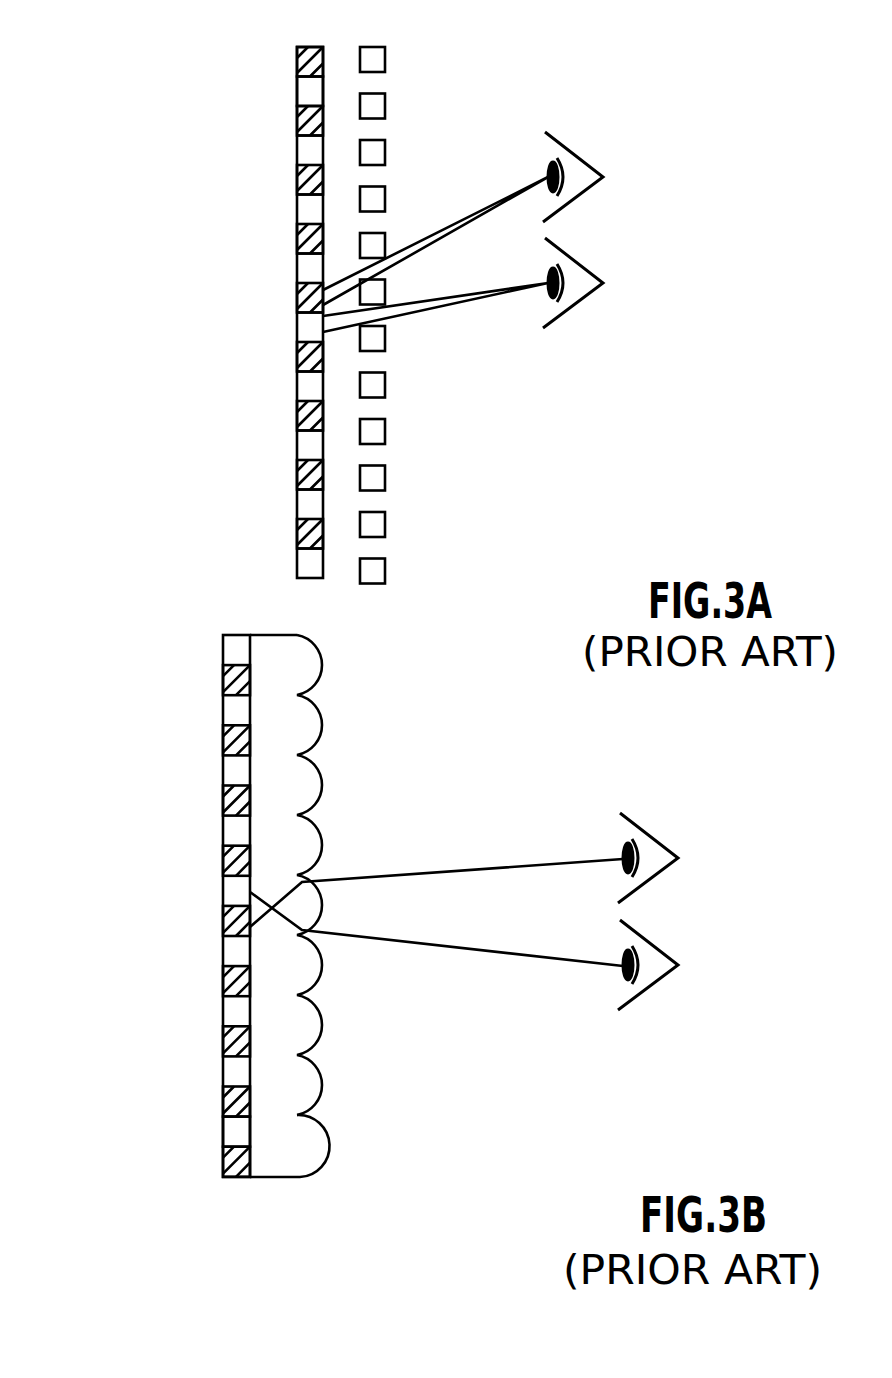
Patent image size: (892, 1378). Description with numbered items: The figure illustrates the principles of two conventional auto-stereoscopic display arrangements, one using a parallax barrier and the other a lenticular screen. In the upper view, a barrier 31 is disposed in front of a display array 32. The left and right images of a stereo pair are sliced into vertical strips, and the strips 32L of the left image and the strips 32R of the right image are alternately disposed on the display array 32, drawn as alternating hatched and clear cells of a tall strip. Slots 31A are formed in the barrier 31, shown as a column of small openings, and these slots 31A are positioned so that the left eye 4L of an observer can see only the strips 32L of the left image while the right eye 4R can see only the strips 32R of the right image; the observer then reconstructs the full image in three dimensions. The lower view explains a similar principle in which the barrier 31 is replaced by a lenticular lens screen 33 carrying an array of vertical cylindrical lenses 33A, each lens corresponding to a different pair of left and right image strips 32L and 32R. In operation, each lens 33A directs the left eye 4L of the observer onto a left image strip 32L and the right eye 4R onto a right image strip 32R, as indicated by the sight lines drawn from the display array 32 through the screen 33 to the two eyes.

In FIG. 3A, the barrier 31 is at (429, 315).
In FIG. 3A, the slots 31A is at (368, 505).
In FIG. 3A, the display array 32 is at (226, 291).
In FIG. 3B, the display array 32 is at (148, 936).
In FIG. 3A, the strips of the left image 32L is at (308, 92).
In FIG. 3B, the strips of the left image 32L is at (222, 1125).
In FIG. 3A, the strips of the right image 32R is at (298, 58).
In FIG. 3B, the strips of the right image 32R is at (222, 1161).
In FIG. 3B, the lenticular lens screen 33 is at (350, 906).
In FIG. 3B, the vertical cylindrical lenses 33A is at (285, 1152).
In FIG. 3A, the right eye 4R is at (575, 157).
In FIG. 3B, the right eye 4R is at (647, 837).
In FIG. 3A, the left eye 4L is at (573, 298).
In FIG. 3B, the left eye 4L is at (647, 988).